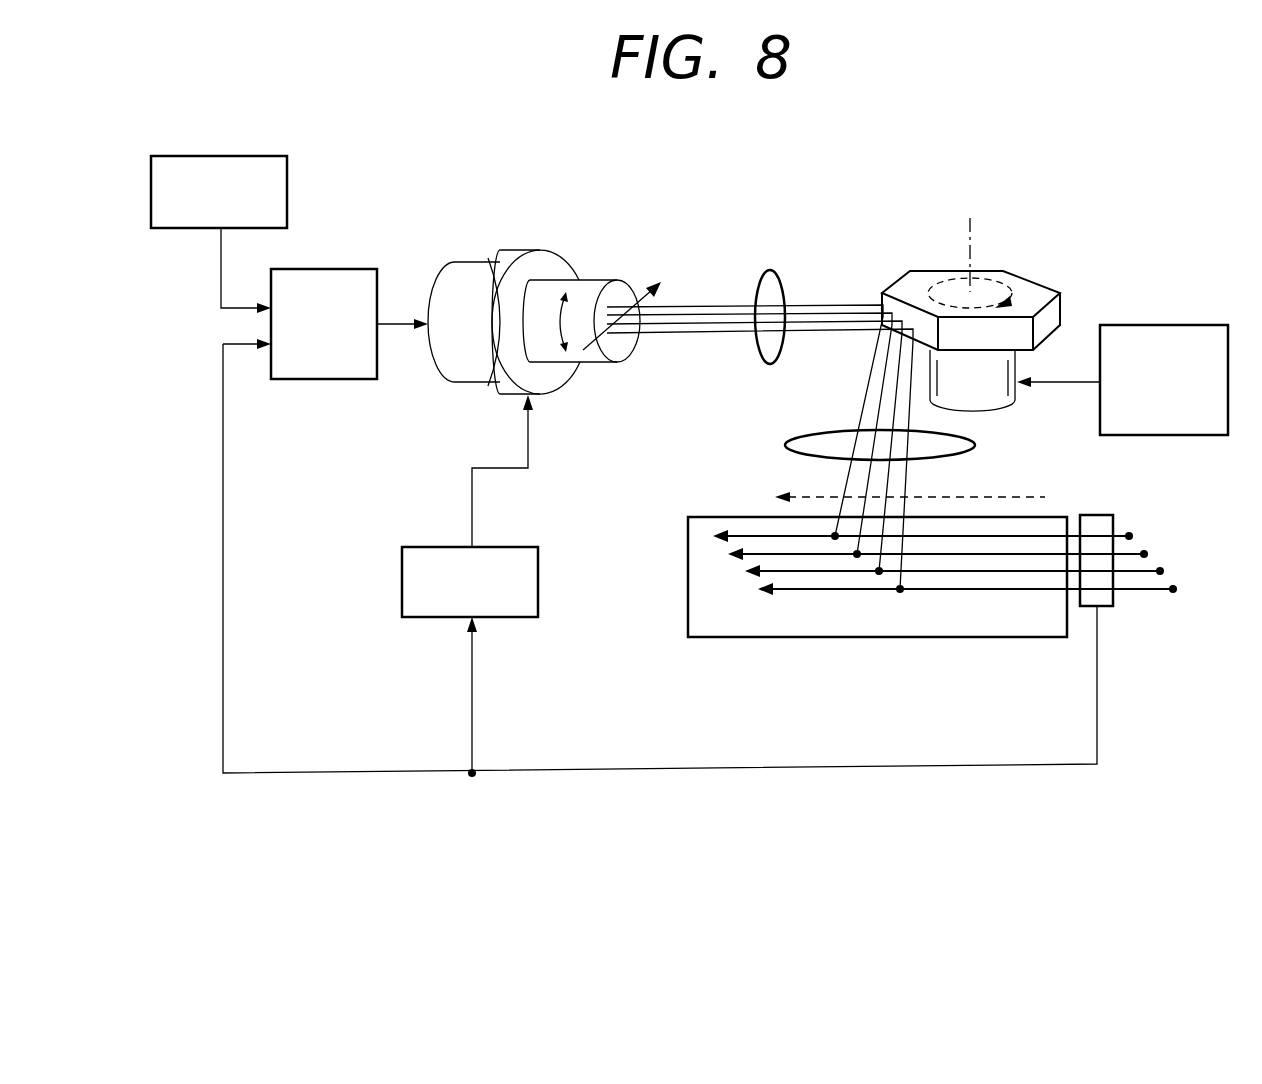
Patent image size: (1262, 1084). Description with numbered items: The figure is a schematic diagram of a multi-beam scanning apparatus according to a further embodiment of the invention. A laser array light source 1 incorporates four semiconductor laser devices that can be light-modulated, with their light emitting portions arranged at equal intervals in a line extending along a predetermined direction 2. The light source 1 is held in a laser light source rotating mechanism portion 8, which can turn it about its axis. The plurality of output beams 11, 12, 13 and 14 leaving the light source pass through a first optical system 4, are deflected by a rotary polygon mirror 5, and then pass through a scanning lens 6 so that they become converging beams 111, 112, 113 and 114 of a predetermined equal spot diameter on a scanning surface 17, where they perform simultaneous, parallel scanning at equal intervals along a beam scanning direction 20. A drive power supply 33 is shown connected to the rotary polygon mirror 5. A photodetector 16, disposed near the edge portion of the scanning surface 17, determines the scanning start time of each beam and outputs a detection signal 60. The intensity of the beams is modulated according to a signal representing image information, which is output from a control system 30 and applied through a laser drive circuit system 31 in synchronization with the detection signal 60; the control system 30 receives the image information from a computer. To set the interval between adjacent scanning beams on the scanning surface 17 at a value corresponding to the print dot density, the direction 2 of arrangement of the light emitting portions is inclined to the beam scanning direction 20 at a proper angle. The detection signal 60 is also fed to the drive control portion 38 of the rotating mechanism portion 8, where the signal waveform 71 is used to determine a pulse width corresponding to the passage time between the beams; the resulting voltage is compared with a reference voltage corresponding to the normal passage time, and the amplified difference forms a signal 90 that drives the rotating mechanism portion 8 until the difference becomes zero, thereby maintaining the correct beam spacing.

The control system 30 is at (288, 183).
The laser drive circuit system 31 is at (340, 269).
The laser light source rotating mechanism portion 8 is at (530, 250).
The laser array light source 1 is at (594, 277).
The direction of arrangement of light emitting portions 2 is at (660, 284).
The output beam 11 is at (648, 333).
The output beam 12 is at (680, 335).
The output beam 13 is at (714, 326).
The output beam 14 is at (746, 334).
The first optical system 4 is at (783, 286).
The rotary polygon mirror 5 is at (1032, 277).
The drive power supply 33 is at (1180, 325).
The scanning lens 6 is at (978, 448).
The beam scanning direction 20 is at (1027, 497).
The scanning surface 17 is at (1000, 638).
The photodetector 16 is at (1097, 515).
The converging beam 111 is at (1129, 536).
The converging beam 112 is at (1144, 554).
The converging beam 113 is at (1160, 571).
The converging beam 114 is at (1173, 589).
The drive control portion 38 is at (505, 548).
The drive signal 90 is at (472, 500).
The signal waveform 71 is at (472, 695).
The detection signal 60 is at (778, 766).